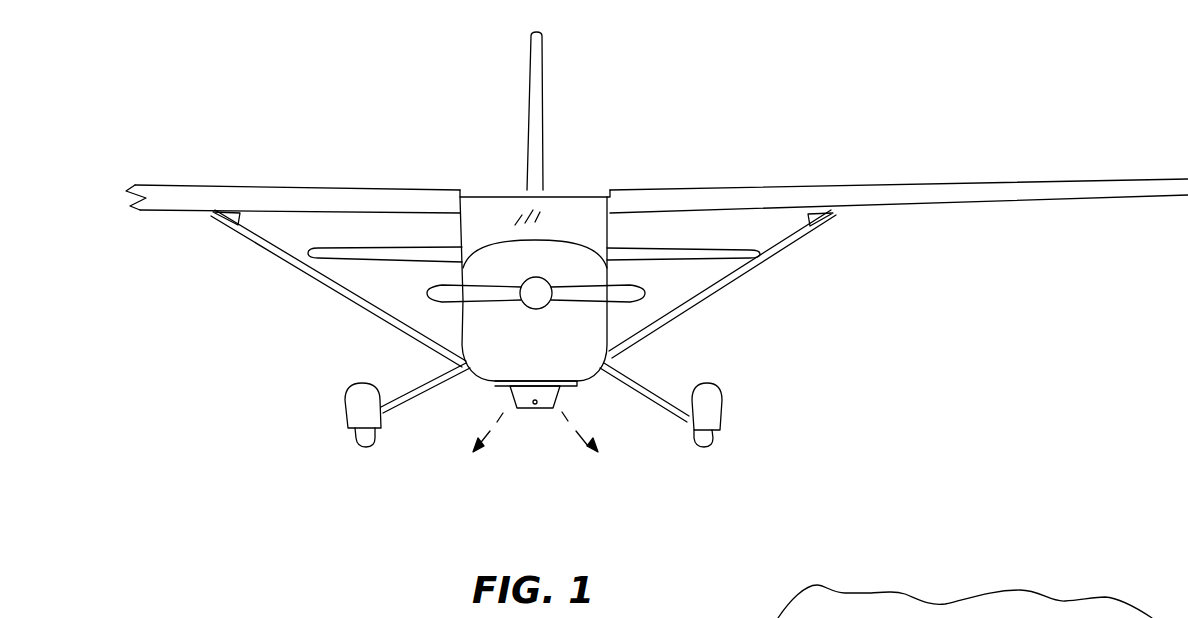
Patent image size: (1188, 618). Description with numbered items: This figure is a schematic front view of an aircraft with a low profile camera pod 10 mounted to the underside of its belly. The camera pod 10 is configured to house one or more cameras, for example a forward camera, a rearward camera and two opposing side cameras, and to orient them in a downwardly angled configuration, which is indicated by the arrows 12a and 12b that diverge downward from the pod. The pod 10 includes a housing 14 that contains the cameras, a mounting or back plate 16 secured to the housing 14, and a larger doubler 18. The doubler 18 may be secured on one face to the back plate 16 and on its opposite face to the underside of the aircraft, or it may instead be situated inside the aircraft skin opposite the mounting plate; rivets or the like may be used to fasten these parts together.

The low profile camera pod 10 is at (558, 468).
The arrow 12a is at (494, 426).
The arrow 12b is at (588, 461).
The housing 14 is at (514, 396).
The mounting or back plate 16 is at (563, 387).
The doubler 18 is at (577, 381).